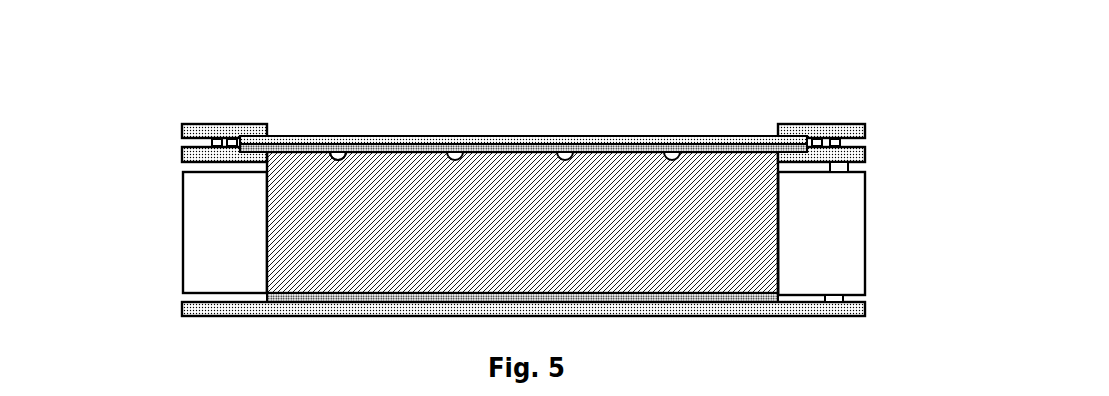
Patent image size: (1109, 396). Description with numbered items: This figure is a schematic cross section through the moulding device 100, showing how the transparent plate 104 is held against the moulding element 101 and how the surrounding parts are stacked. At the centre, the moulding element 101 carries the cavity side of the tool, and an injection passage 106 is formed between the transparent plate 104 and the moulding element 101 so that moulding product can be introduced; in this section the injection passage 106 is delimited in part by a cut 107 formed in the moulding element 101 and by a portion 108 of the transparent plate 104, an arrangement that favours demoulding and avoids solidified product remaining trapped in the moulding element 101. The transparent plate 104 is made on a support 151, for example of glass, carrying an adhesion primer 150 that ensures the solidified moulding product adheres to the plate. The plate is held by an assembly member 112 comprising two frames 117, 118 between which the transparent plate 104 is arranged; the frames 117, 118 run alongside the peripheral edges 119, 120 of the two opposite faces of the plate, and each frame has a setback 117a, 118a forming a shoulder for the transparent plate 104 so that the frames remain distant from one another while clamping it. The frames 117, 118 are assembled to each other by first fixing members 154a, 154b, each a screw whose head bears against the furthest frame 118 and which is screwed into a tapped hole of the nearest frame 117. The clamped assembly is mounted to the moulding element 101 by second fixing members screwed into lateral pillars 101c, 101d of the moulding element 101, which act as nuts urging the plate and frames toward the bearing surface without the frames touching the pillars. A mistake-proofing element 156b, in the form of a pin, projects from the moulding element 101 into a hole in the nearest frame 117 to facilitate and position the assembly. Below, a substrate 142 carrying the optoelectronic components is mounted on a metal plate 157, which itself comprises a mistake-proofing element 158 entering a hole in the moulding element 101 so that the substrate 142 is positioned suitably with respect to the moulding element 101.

The moulding device 100 is at (196, 96).
The moulding element 101 is at (525, 264).
The lateral pillar 101c is at (205, 280).
The lateral pillar 101d is at (848, 267).
The transparent plate 104 is at (523, 107).
The injection passage 106 is at (332, 157).
The cut 107 is at (338, 160).
The portion of the transparent plate 108 is at (340, 150).
The assembly member 112 is at (881, 96).
The frame 117 is at (182, 150).
The setback 117a is at (865, 149).
The frame 118 is at (183, 129).
The setback 118a is at (822, 128).
The peripheral edge 119 is at (790, 173).
The peripheral edge 120 is at (795, 125).
The substrate 142 is at (544, 334).
The adhesion primer 150 is at (597, 148).
The support 151 is at (552, 138).
The first fixing member 154a is at (218, 142).
The first fixing member 154b is at (833, 143).
The mistake-proofing element 156b is at (833, 172).
The metal plate 157 is at (277, 305).
The mistake-proofing element 158 is at (832, 303).